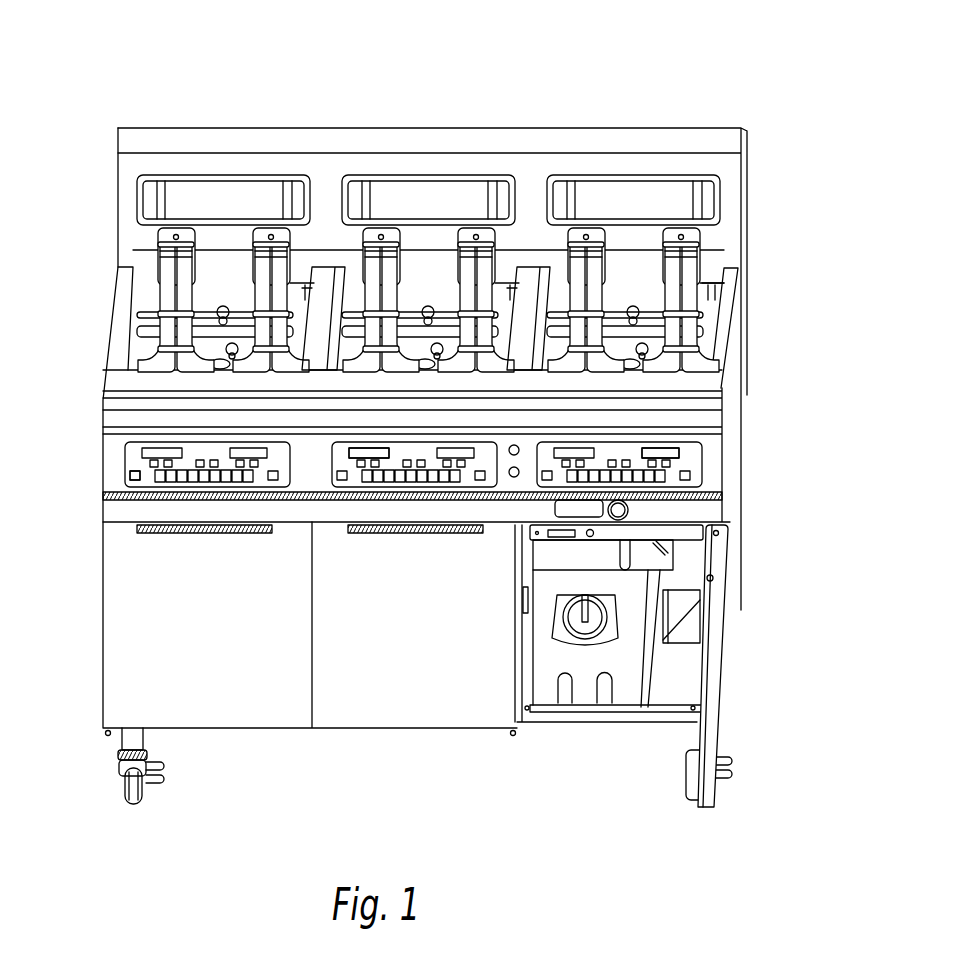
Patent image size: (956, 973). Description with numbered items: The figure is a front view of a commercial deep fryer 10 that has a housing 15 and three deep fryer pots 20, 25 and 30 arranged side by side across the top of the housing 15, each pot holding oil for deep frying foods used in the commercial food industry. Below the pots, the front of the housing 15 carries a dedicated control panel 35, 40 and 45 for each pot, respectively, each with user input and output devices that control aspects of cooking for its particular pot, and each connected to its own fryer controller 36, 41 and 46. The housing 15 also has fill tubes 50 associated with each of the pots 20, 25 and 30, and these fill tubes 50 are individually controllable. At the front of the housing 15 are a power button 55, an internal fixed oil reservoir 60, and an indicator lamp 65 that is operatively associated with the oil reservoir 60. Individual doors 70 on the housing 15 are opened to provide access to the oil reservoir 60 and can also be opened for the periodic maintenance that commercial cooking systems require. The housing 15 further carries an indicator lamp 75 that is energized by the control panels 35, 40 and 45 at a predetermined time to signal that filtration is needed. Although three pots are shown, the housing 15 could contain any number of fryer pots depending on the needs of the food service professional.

The deep fryer 10 is at (258, 76).
The housing 15 is at (732, 408).
The deep fryer pot 20 is at (218, 278).
The deep fryer pot 25 is at (414, 238).
The deep fryer pot 30 is at (652, 272).
The control panel 35 is at (138, 463).
The fryer controller 36 is at (127, 472).
The control panel 40 is at (330, 477).
The fryer controller 41 is at (337, 455).
The control panel 45 is at (673, 465).
The fryer controller 46 is at (693, 448).
The fill tubes 50 is at (712, 298).
The power button 55 is at (630, 508).
The oil reservoir 60 is at (632, 640).
The indicator lamp 65 is at (509, 474).
The doors 70 is at (707, 732).
The indicator lamp 75 is at (509, 453).